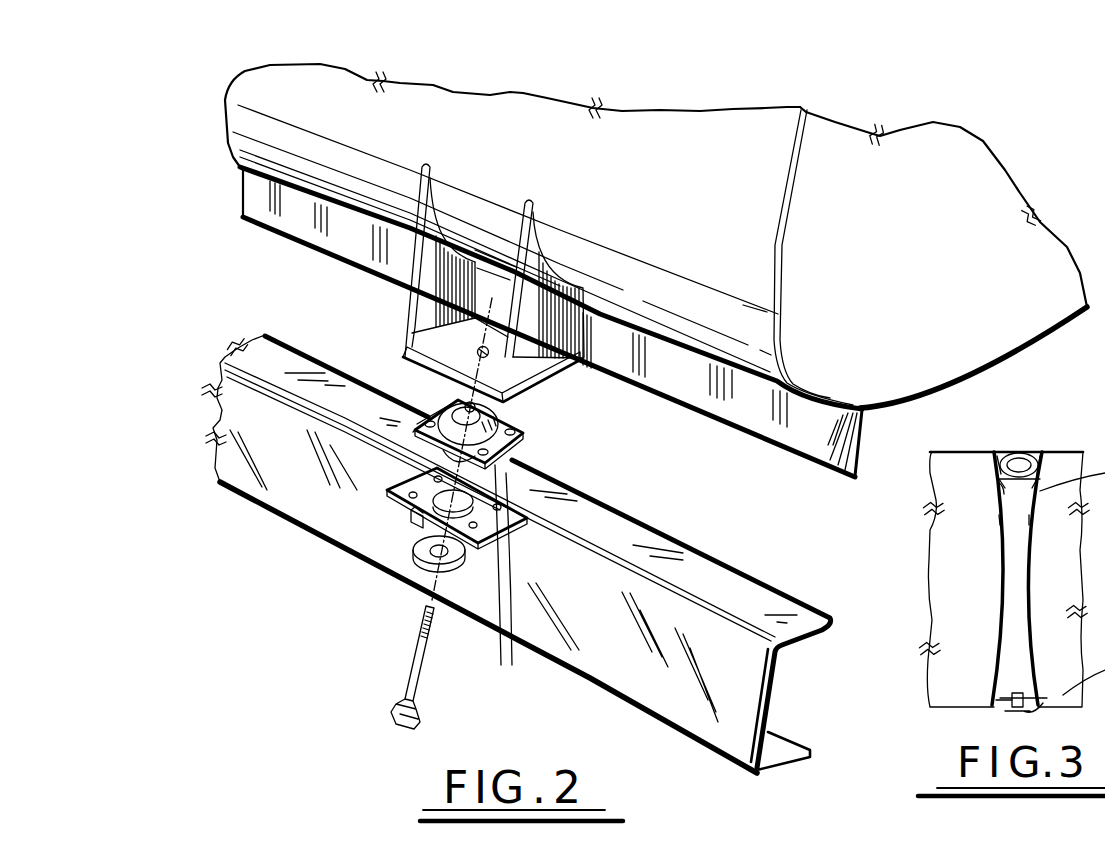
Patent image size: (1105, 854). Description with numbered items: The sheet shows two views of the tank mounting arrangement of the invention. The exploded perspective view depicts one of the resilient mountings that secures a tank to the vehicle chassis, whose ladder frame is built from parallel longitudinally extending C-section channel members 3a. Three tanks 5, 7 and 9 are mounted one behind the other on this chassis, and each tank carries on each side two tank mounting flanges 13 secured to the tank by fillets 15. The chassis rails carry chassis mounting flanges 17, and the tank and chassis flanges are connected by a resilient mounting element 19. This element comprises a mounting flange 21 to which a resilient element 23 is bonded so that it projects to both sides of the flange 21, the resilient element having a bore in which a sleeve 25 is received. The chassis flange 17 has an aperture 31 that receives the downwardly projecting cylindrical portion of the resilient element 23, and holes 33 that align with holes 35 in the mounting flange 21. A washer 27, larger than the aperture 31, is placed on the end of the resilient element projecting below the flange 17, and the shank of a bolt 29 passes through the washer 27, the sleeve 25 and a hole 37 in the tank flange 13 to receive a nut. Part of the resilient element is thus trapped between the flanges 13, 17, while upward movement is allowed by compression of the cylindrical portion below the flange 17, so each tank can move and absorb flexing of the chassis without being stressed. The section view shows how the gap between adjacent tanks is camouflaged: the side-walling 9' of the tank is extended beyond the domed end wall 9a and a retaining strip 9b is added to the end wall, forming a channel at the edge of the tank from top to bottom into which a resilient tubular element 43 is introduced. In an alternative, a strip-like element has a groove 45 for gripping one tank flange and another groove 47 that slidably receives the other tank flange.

In FIG. 2, the C-section channel member 3a is at (680, 703).
In FIG. 2, the tank 5 is at (963, 273).
In FIG. 2, the tank 7 is at (552, 323).
In FIG. 3, the tank 7 is at (973, 608).
In FIG. 2, the tank 9 is at (930, 257).
In FIG. 3, the tank 9 is at (1066, 579).
In FIG. 3, the side-walling of the tank 9' is at (1030, 424).
In FIG. 3, the domed end wall 9a is at (998, 516).
In FIG. 3, the retaining strip 9b is at (993, 498).
In FIG. 2, the tank mounting flange 13 is at (440, 360).
In FIG. 2, the fillet 15 is at (428, 306).
In FIG. 2, the chassis mounting flange 17 is at (413, 498).
In FIG. 2, the resilient mounting element 19 is at (532, 441).
In FIG. 2, the mounting flange 21 is at (523, 453).
In FIG. 2, the resilient element 23 is at (413, 432).
In FIG. 2, the sleeve 25 is at (417, 424).
In FIG. 2, the washer 27 is at (427, 562).
In FIG. 2, the bolt 29 is at (412, 652).
In FIG. 2, the aperture 31 is at (417, 521).
In FIG. 2, the holes 33 is at (474, 584).
In FIG. 2, the holes 35 is at (523, 427).
In FIG. 2, the hole 37 is at (480, 349).
In FIG. 3, the resilient tubular element 43 is at (1018, 450).
In FIG. 3, the groove 45 is at (1036, 690).
In FIG. 3, the groove 47 is at (994, 690).